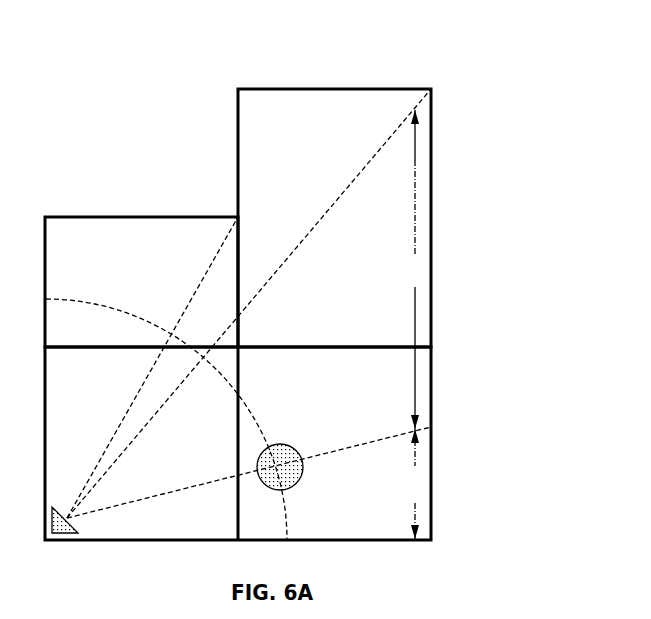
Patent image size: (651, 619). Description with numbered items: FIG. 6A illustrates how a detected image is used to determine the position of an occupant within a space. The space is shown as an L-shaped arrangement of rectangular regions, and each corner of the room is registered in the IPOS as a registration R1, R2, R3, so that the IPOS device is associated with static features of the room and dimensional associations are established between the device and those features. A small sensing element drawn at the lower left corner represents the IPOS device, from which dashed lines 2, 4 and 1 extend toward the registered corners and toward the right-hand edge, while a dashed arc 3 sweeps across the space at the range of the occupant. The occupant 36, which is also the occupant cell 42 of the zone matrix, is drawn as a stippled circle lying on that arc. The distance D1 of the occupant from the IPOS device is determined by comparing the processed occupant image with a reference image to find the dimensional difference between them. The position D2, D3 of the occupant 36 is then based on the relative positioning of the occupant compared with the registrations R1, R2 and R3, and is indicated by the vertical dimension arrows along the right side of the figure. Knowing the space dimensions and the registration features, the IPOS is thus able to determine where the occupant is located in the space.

The registration R1 is at (433, 538).
The registration R2 is at (433, 91).
The registration R3 is at (232, 217).
The first line 1 is at (249, 458).
The second line 2 is at (249, 303).
The arc 3 is at (166, 406).
The fourth line 4 is at (152, 367).
The distance D1 is at (166, 419).
The position D2 is at (415, 269).
The position D3 is at (415, 484).
The occupant 36 is at (412, 382).
The occupant cell 42 is at (281, 445).